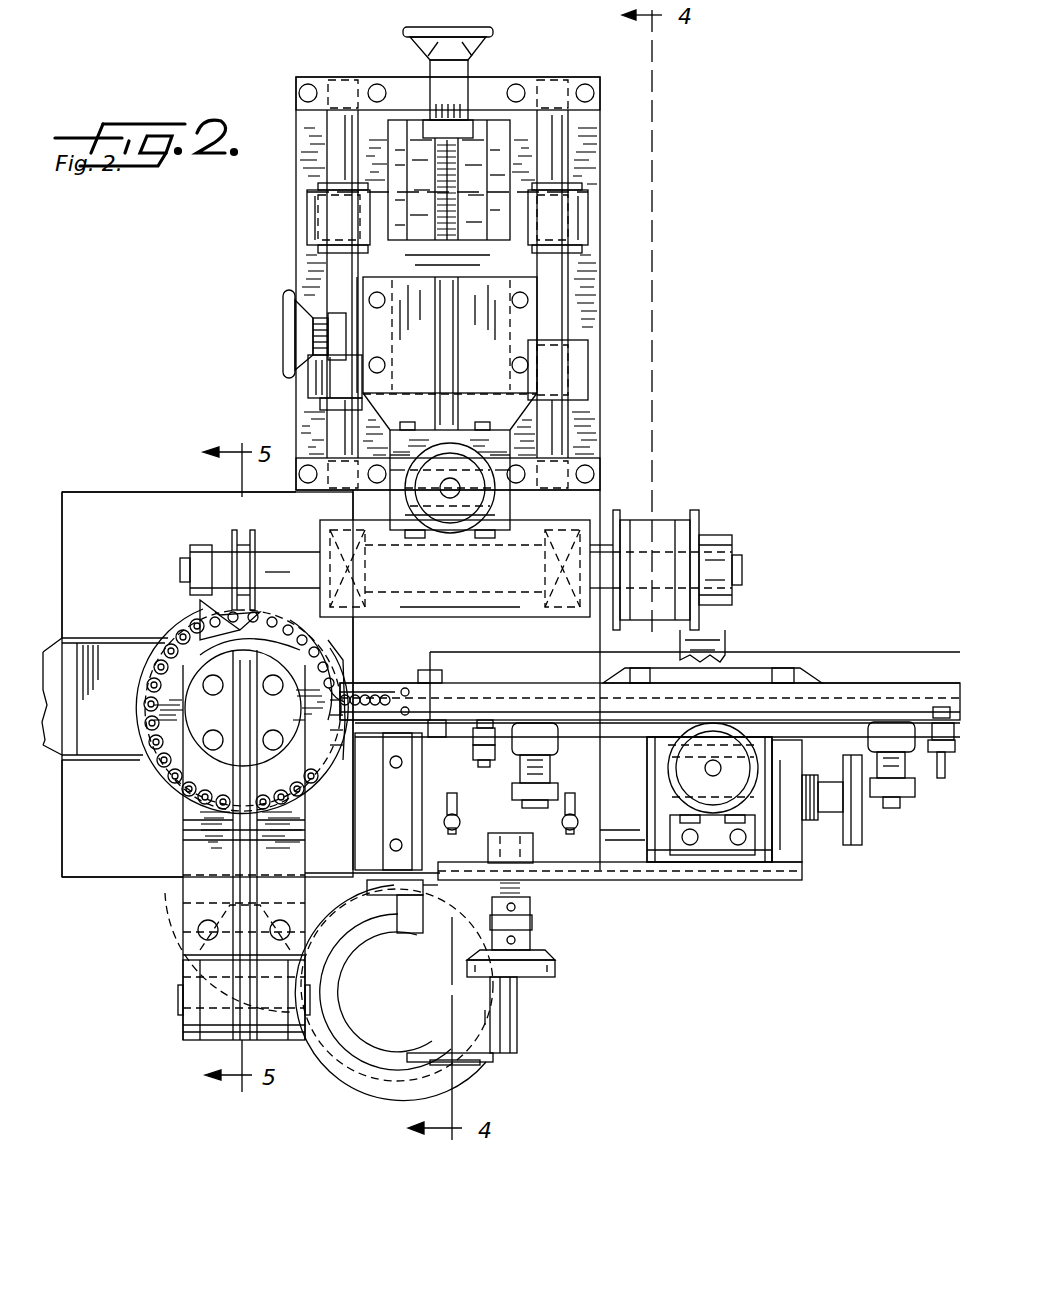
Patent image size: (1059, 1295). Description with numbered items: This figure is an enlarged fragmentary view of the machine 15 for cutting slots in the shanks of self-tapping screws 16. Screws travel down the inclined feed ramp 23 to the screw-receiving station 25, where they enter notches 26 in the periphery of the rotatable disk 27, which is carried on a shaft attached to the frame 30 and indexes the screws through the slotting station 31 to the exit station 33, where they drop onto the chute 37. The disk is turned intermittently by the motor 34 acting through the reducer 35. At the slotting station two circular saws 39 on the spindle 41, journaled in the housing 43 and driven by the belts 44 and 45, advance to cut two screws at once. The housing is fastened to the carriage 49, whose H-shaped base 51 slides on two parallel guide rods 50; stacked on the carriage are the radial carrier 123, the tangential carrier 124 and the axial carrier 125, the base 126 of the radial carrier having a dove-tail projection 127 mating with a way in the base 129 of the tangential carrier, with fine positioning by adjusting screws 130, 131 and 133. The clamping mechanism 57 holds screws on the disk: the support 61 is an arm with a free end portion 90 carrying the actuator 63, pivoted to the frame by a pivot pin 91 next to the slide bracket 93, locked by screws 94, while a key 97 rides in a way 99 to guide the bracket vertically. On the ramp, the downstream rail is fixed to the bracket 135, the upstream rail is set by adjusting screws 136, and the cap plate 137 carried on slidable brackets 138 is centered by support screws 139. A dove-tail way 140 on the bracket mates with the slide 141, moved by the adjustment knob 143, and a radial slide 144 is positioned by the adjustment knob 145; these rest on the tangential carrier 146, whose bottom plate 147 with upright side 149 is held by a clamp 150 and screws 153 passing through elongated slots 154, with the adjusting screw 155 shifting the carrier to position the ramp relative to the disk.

The machine 15 is at (160, 408).
The self-tapping screw 16 is at (245, 625).
The feed ramp 23 is at (878, 672).
The screw-receiving station 25 is at (368, 688).
The notches 26 is at (335, 740).
The disk 27 is at (320, 645).
The frame 30 is at (590, 290).
The slotting station 31 is at (208, 608).
The exit station 33 is at (124, 728).
The motor 34 is at (372, 1098).
The reducer 35 is at (510, 1020).
The chute 37 is at (110, 655).
The circular saws 39 is at (250, 532).
The spindle 41 is at (300, 560).
The housing 43 is at (590, 510).
The belt 44 is at (668, 512).
The belt 45 is at (715, 625).
The carriage 49 is at (604, 206).
The guide rods 50 is at (296, 166).
The H-shaped base 51 is at (590, 232).
The clamping mechanism 57 is at (160, 830).
The support 61 is at (170, 708).
The actuator 63 is at (158, 800).
The free end portion 90 is at (240, 1030).
The pivot pin 91 is at (180, 992).
The slide bracket 93 is at (205, 1025).
The screws 94 is at (198, 928).
The key 97 is at (185, 960).
The way 99 is at (200, 905).
The radial carrier 123 is at (412, 108).
The tangential carrier 124 is at (350, 298).
The axial carrier 125 is at (378, 455).
The base 126 is at (485, 150).
The dove-tail projection 127 is at (488, 155).
The base 129 is at (408, 245).
The adjusting screw 130 is at (410, 38).
The adjusting screw 131 is at (283, 332).
The adjusting screw 133 is at (485, 490).
The bracket 135 is at (760, 670).
The adjusting screws 136 is at (530, 805).
The cap plate 137 is at (545, 680).
The slidable brackets 138 is at (510, 700).
The support screws 139 is at (483, 768).
The dove-tail way 140 is at (770, 740).
The slide 141 is at (760, 795).
The adjustment knob 143 is at (715, 815).
The radial slide 144 is at (790, 835).
The adjustment knob 145 is at (852, 840).
The tangential carrier 146 is at (670, 885).
The bottom plate 147 is at (640, 878).
The upright side 149 is at (625, 885).
The clamp 150 is at (418, 908).
The screws 153 is at (448, 822).
The elongated slots 154 is at (442, 800).
The adjusting screw 155 is at (555, 970).